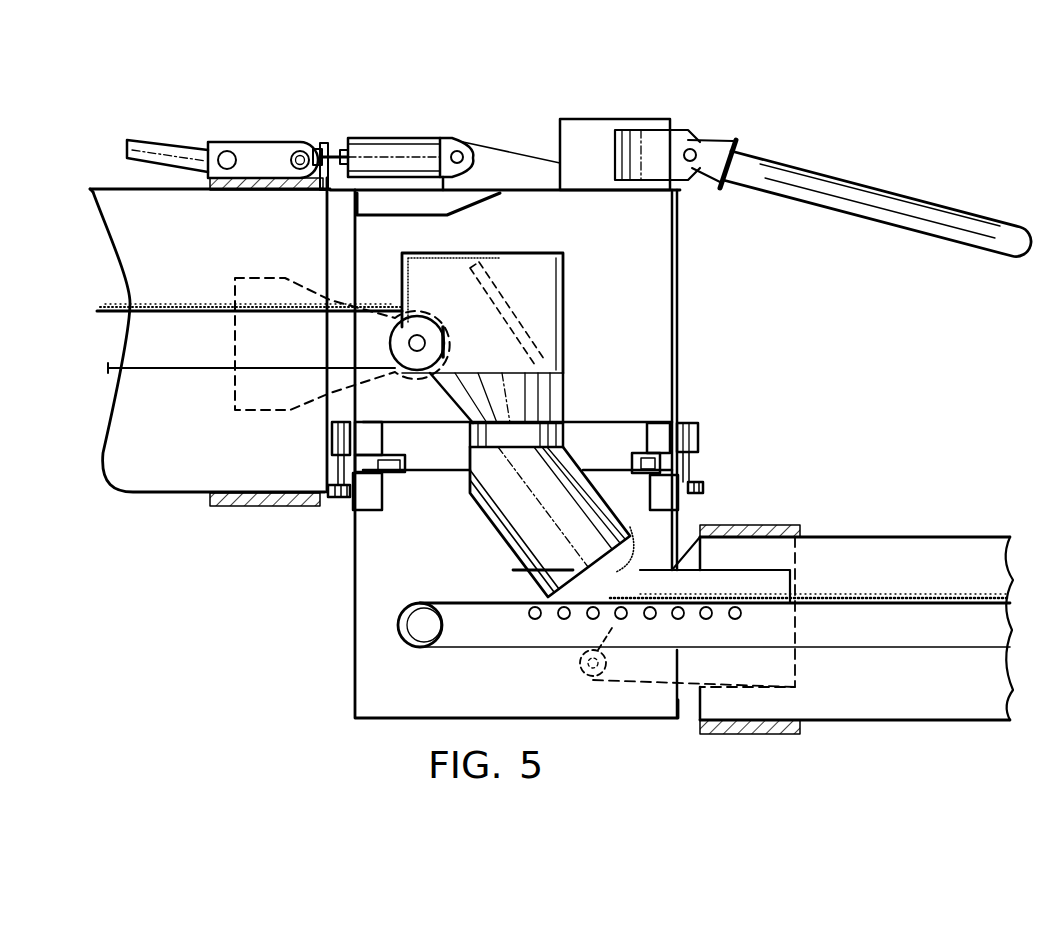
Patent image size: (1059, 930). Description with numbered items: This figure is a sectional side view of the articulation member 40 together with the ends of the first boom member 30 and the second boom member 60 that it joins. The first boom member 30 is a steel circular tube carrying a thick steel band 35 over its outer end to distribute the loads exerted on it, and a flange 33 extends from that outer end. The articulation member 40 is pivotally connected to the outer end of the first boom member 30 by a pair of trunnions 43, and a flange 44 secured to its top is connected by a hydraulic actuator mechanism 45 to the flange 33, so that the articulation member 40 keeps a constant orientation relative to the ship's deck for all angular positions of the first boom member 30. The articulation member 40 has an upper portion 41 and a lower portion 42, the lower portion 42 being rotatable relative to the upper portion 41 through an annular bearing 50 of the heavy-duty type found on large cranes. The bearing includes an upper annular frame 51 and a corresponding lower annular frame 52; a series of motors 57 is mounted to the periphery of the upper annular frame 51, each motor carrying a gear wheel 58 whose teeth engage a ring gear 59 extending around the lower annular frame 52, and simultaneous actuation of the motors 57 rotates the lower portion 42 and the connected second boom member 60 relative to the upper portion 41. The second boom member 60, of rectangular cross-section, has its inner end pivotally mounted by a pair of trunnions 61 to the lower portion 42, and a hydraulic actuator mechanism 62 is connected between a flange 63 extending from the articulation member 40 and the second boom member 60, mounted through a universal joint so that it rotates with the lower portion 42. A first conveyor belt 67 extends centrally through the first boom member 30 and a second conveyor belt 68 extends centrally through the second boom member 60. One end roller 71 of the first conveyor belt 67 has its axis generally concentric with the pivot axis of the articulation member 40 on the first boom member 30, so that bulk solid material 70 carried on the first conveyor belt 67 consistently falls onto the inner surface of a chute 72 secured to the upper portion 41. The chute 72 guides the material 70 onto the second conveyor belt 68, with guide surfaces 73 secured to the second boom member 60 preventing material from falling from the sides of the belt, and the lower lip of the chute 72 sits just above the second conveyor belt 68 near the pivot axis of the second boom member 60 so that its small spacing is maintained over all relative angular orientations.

The first boom member 30 is at (168, 493).
The flange 33 is at (222, 143).
The thick steel band 35 is at (203, 180).
The articulation member 40 is at (678, 382).
The upper portion 41 is at (680, 262).
The lower portion 42 is at (352, 633).
The pair of trunnions 43 is at (345, 378).
The flange 44 is at (493, 172).
The hydraulic actuator mechanism 45 is at (390, 152).
The annular bearing 50 is at (633, 455).
The upper annular frame 51 is at (357, 410).
The lower annular frame 52 is at (370, 515).
The motors 57 is at (332, 440).
The gear wheel 58 is at (333, 500).
The ring gear 59 is at (343, 505).
The second boom member 60 is at (990, 537).
The pair of trunnions 61 is at (683, 680).
The hydraulic actuator mechanism 62 is at (888, 200).
The flange 63 is at (602, 132).
The first conveyor belt 67 is at (151, 318).
The second conveyor belt 68 is at (970, 607).
The bulk solid material 70 is at (120, 303).
The end roller 71 is at (398, 325).
The chute 72 is at (567, 381).
The guide surfaces 73 is at (515, 576).